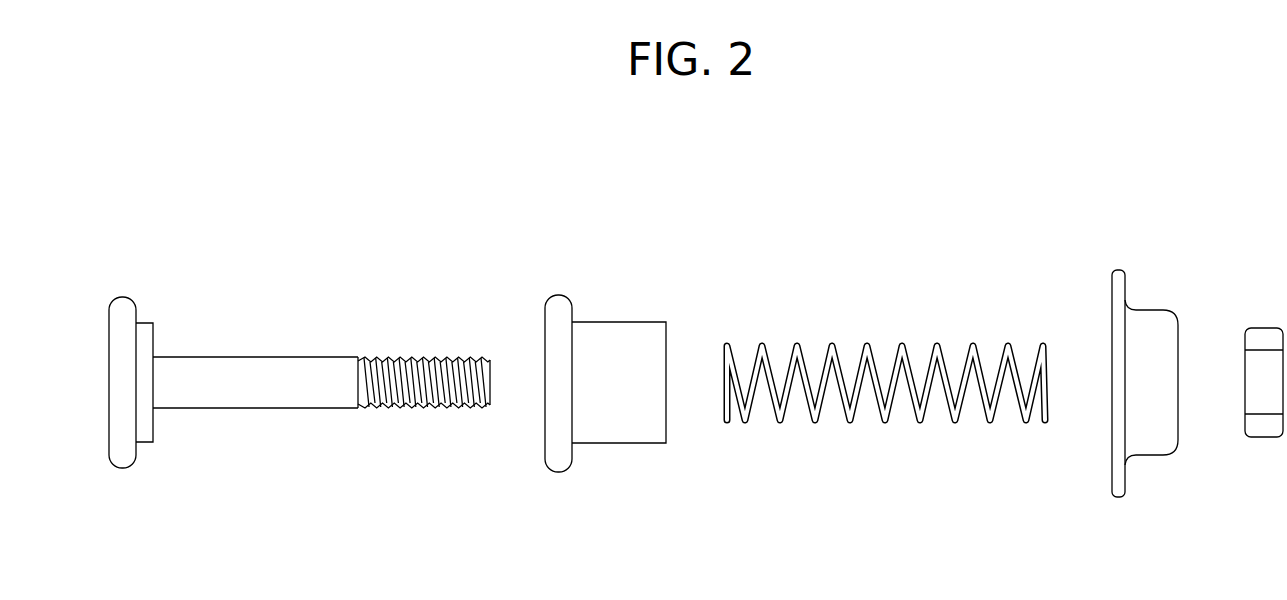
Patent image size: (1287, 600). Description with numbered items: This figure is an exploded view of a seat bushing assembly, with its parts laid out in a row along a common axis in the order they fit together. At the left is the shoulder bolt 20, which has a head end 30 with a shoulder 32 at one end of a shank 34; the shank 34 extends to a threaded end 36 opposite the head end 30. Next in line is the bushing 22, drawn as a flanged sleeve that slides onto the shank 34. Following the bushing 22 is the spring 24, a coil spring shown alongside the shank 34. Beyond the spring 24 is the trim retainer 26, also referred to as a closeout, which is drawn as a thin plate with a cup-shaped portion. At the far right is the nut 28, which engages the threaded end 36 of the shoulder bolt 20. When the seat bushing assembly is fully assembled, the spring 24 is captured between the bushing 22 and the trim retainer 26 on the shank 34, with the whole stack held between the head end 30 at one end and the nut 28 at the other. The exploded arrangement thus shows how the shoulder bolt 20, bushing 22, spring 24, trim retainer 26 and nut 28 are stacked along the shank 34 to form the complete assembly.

The shoulder bolt 20 is at (237, 328).
The bushing 22 is at (624, 430).
The spring 24 is at (867, 342).
The trim retainer 26 is at (1153, 443).
The nut 28 is at (1257, 335).
The head end 30 is at (109, 345).
The shoulder 32 is at (143, 436).
The shank 34 is at (248, 396).
The threaded end 36 is at (412, 356).